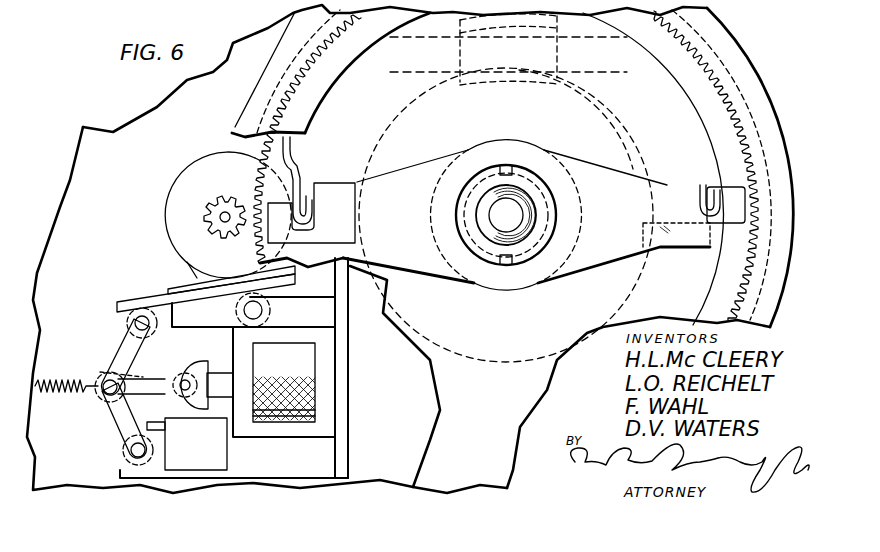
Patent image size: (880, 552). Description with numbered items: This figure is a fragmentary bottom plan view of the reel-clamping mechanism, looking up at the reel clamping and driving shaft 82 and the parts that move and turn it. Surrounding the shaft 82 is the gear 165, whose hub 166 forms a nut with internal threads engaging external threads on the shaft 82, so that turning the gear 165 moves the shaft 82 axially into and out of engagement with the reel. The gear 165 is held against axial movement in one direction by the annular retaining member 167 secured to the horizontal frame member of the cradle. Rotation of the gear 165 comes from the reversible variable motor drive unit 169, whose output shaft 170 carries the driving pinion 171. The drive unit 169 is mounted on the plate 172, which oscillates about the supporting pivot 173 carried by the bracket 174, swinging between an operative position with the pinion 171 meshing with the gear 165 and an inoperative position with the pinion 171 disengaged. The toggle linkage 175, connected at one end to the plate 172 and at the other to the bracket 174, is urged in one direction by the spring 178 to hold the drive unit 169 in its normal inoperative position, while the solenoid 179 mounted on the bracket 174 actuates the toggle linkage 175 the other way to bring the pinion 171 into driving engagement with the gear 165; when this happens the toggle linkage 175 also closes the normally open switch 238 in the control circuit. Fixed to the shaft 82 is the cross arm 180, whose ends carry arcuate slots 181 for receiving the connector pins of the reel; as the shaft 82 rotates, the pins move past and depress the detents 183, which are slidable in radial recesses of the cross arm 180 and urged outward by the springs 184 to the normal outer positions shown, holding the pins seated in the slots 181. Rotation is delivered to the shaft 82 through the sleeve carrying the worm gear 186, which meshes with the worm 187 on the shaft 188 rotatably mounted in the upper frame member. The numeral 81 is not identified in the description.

The shaft 81 is at (520, 236).
The reel clamping and driving shaft 82 is at (496, 240).
The gear 165 is at (232, 137).
The hub 166 is at (441, 178).
The annular retaining member 167 is at (272, 55).
The reversible variable motor drive unit 169 is at (183, 166).
The output shaft 170 is at (222, 218).
The driving pinion 171 is at (204, 214).
The plate 172 is at (143, 290).
The supporting pivot 173 is at (262, 310).
The bracket 174 is at (103, 487).
The toggle linkage 175 is at (115, 353).
The spring 178 is at (38, 393).
The solenoid 179 is at (262, 430).
The cross arm 180 is at (338, 190).
The arcuate slots 181 is at (714, 192).
The detents 183 is at (345, 162).
The springs 184 is at (512, 165).
The worm gear 186 is at (620, 113).
The worm 187 is at (610, 23).
The shaft 188 is at (600, 78).
The normally open switch 238 is at (190, 470).